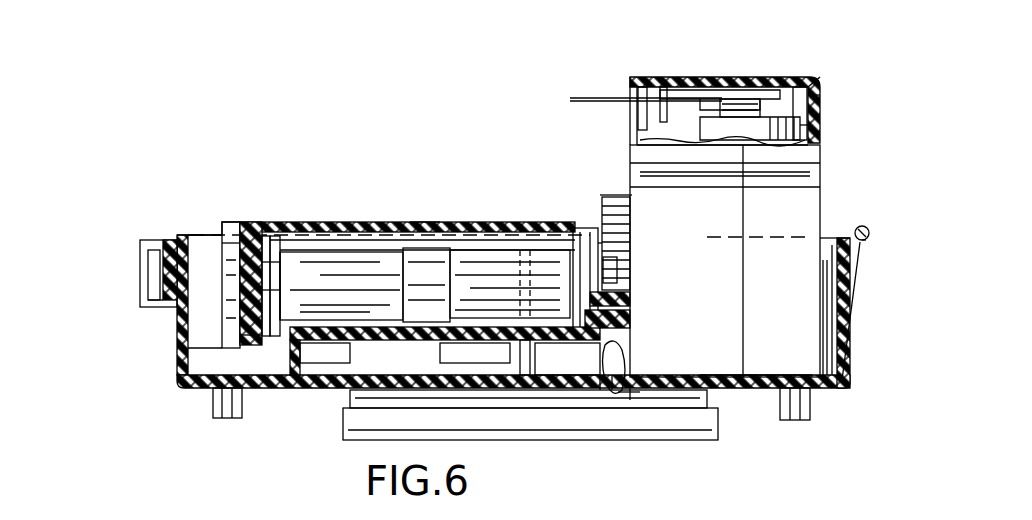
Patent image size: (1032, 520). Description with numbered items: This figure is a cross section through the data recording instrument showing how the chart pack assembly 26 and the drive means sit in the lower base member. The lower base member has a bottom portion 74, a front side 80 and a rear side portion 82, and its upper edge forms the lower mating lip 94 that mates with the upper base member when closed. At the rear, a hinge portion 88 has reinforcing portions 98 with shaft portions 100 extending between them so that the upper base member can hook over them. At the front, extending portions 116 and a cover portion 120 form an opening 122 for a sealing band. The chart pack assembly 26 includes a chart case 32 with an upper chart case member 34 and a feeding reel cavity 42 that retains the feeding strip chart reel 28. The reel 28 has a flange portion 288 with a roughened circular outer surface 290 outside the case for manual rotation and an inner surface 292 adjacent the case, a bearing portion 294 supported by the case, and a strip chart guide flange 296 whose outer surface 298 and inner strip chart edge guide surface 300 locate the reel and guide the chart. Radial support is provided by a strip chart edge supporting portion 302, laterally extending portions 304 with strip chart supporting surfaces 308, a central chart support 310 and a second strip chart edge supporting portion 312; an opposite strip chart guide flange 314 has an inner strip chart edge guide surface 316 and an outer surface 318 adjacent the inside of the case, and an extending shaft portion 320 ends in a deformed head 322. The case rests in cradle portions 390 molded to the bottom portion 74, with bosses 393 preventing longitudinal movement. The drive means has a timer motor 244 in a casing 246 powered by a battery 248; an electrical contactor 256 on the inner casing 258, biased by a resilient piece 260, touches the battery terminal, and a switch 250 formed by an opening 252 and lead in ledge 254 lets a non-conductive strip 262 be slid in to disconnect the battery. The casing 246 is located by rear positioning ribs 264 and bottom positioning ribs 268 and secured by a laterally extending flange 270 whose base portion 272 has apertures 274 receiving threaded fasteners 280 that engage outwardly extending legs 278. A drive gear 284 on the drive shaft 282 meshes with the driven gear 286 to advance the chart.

The chart pack assembly 26 is at (258, 228).
The feeding strip chart reel 28 is at (206, 364).
The chart case 32 is at (357, 222).
The upper chart case member 34 is at (477, 228).
The feeding reel cavity 42 is at (407, 340).
The bottom portion 74 is at (818, 390).
The front side 80 is at (177, 340).
The rear side portion 82 is at (850, 302).
The hinge portion 88 is at (872, 240).
The lower mating lip 94 is at (843, 238).
The reinforcing portions 98 is at (856, 283).
The shaft portions 100 is at (870, 234).
The extending portions 116 is at (160, 295).
The cover portion 120 is at (148, 270).
The opening 122 is at (160, 283).
The timer motor 244 is at (813, 100).
The casing 246 is at (818, 85).
The battery 248 is at (802, 125).
The switch 250 is at (793, 90).
The opening 252 is at (633, 80).
The lead in ledge 254 is at (602, 100).
The electrical contactor 256 is at (727, 92).
The inner casing 258 is at (668, 84).
The resilient piece 260 is at (757, 92).
The non-conductive strip 262 is at (636, 90).
The rear positioning ribs 264 is at (832, 352).
The bottom positioning ribs 268 is at (755, 375).
The laterally extending flange 270 is at (567, 359).
The base portion 272 is at (628, 368).
The apertures 274 is at (590, 393).
The outwardly extending legs 278 is at (634, 394).
The threaded fasteners 280 is at (612, 397).
The drive shaft 282 is at (645, 163).
The drive gear 284 is at (618, 185).
The driven gear 286 is at (632, 302).
The flange portion 288 is at (227, 241).
The roughened circular outer surface 290 is at (223, 221).
The inner surface 292 is at (247, 222).
The bearing portion 294 is at (262, 290).
The strip chart guide flange 296 is at (264, 234).
The outer surface 298 is at (262, 265).
The inner strip chart edge guide surface 300 is at (240, 333).
The strip chart edge supporting portion 302 is at (297, 250).
The laterally extending portions 304 is at (370, 253).
The strip chart supporting surfaces 308 is at (418, 222).
The central chart support 310 is at (510, 228).
The strip chart edge supporting portion 312 is at (573, 228).
The strip chart guide flange 314 is at (627, 217).
The inner strip chart edge guide surface 316 is at (615, 330).
The gear bushing 318 is at (620, 306).
The extending shaft portion 320 is at (612, 281).
The head 322 is at (625, 248).
The cradle portion 390 is at (300, 372).
The bosses 393 is at (505, 350).